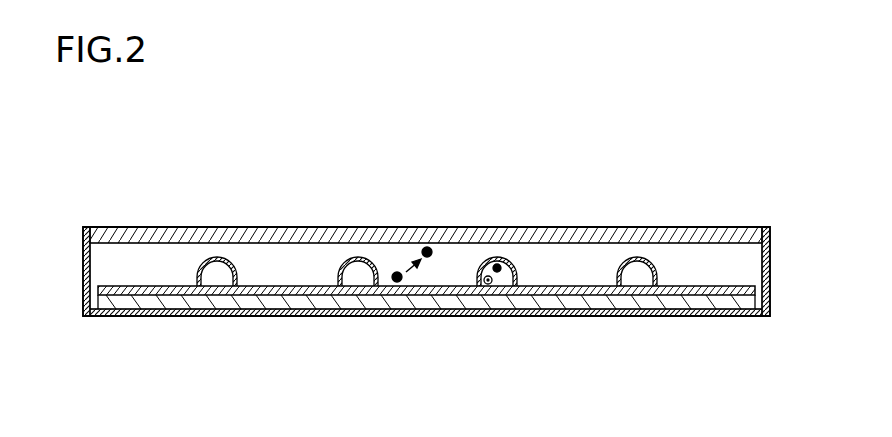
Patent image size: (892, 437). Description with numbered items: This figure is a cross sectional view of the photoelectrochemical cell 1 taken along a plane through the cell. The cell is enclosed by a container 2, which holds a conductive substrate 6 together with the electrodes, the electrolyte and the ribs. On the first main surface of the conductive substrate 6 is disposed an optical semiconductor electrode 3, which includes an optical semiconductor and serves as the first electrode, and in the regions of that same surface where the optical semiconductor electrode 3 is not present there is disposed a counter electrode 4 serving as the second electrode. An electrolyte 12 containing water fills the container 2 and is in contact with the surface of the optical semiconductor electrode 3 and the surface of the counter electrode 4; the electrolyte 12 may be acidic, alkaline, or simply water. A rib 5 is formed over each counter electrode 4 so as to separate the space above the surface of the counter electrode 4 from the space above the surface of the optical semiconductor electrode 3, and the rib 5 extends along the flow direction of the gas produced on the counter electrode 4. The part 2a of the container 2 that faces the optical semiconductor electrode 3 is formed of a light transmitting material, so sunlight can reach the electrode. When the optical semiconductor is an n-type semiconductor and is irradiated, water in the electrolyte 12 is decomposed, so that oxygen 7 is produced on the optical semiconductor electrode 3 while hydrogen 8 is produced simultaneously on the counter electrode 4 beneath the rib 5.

The photoelectrochemical cell 1 is at (744, 121).
The container 2 is at (770, 262).
The part of the container 2a is at (690, 232).
The optical semiconductor electrode 3 is at (133, 305).
The counter electrode 4 is at (203, 305).
The rib 5 is at (217, 257).
The conductive substrate 6 is at (597, 305).
The oxygen 7 is at (427, 247).
The hydrogen 8 is at (503, 263).
The electrolyte 12 is at (102, 263).